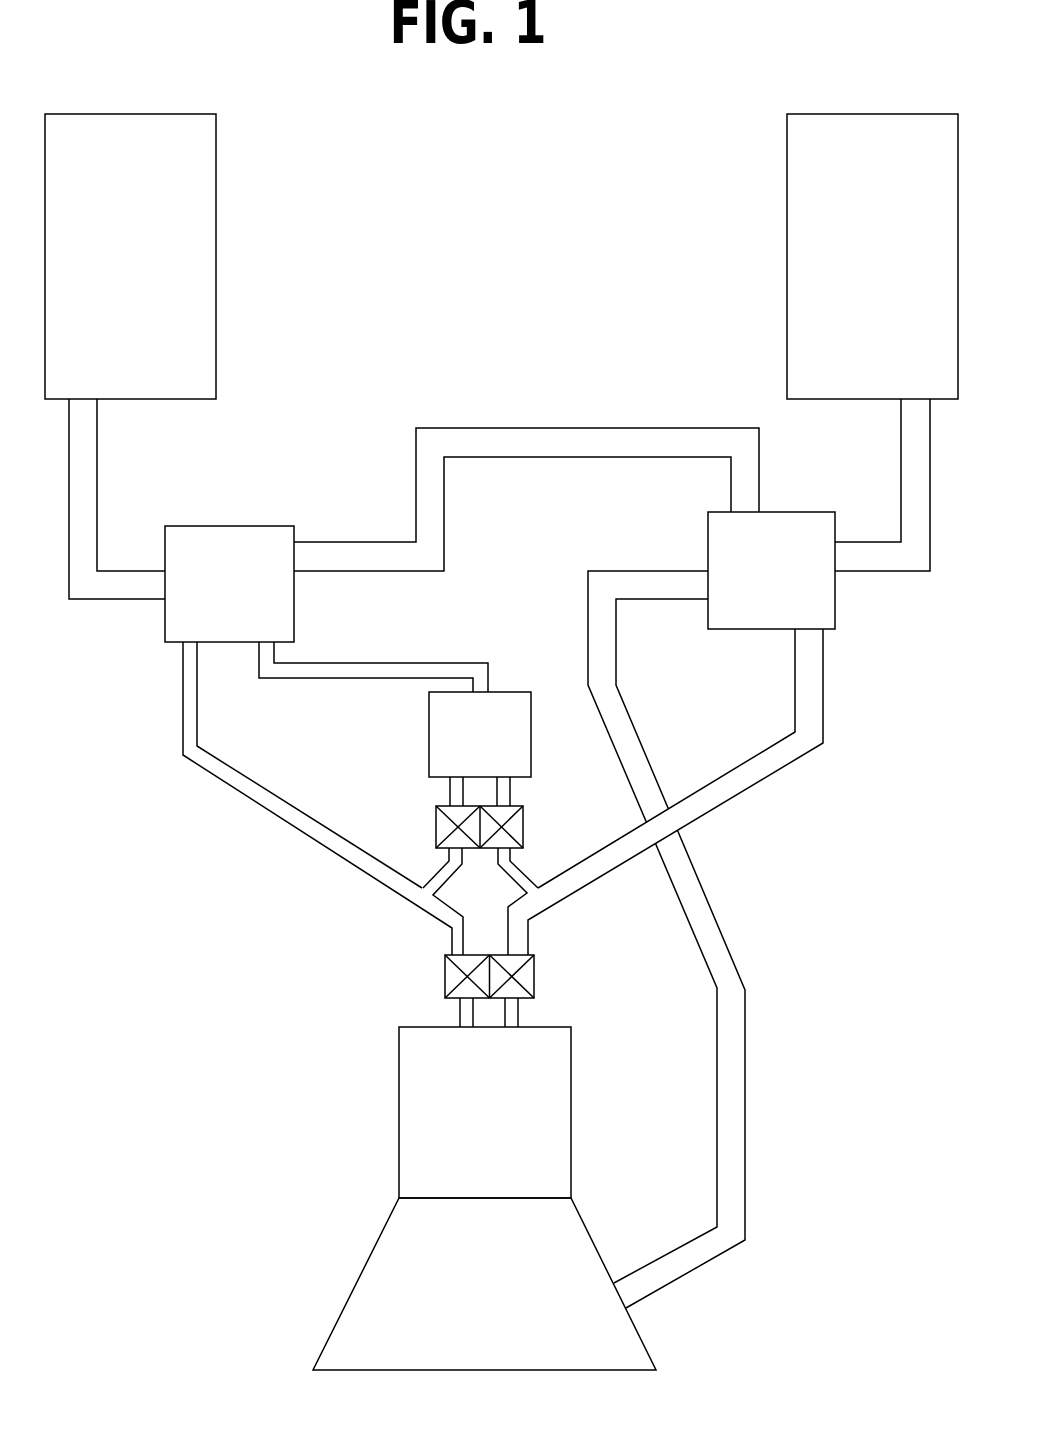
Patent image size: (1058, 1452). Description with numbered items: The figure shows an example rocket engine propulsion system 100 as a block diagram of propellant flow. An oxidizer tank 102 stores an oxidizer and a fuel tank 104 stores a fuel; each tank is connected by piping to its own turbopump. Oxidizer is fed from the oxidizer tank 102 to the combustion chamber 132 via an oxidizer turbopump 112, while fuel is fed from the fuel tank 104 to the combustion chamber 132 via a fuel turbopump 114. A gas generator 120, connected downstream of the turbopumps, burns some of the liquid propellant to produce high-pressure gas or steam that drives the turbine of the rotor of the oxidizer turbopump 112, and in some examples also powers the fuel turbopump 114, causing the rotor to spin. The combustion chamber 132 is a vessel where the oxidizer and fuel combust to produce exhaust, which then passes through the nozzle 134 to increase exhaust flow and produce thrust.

The rocket engine propulsion system 100 is at (458, 197).
The oxidizer tank 102 is at (112, 267).
The fuel tank 104 is at (853, 267).
The oxidizer turbopump 112 is at (209, 597).
The fuel turbopump 114 is at (752, 582).
The gas generator 120 is at (460, 744).
The combustion chamber 132 is at (463, 1089).
The nozzle 134 is at (462, 1307).